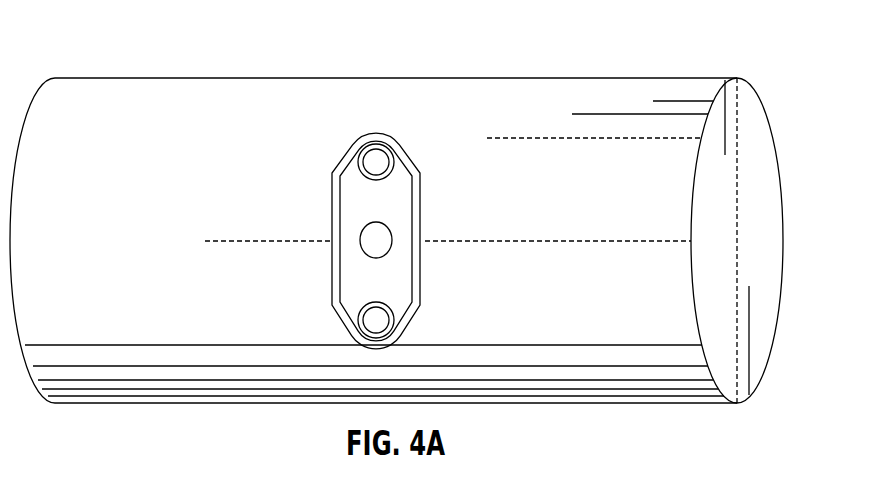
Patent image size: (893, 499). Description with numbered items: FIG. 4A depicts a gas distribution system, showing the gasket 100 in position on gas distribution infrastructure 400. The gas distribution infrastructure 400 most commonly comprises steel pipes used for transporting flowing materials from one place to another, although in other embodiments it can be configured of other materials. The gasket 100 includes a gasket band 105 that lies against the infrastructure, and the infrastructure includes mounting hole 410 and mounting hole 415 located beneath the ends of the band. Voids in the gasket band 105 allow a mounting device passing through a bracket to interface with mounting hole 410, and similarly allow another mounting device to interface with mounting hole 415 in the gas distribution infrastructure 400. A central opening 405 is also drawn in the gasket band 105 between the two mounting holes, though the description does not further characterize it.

The gas distribution infrastructure 400 is at (134, 110).
The gasket 100 is at (350, 120).
The gasket band 105 is at (335, 200).
The mounting hole 410 is at (379, 161).
The center opening 405 is at (382, 243).
The mounting hole 415 is at (377, 320).